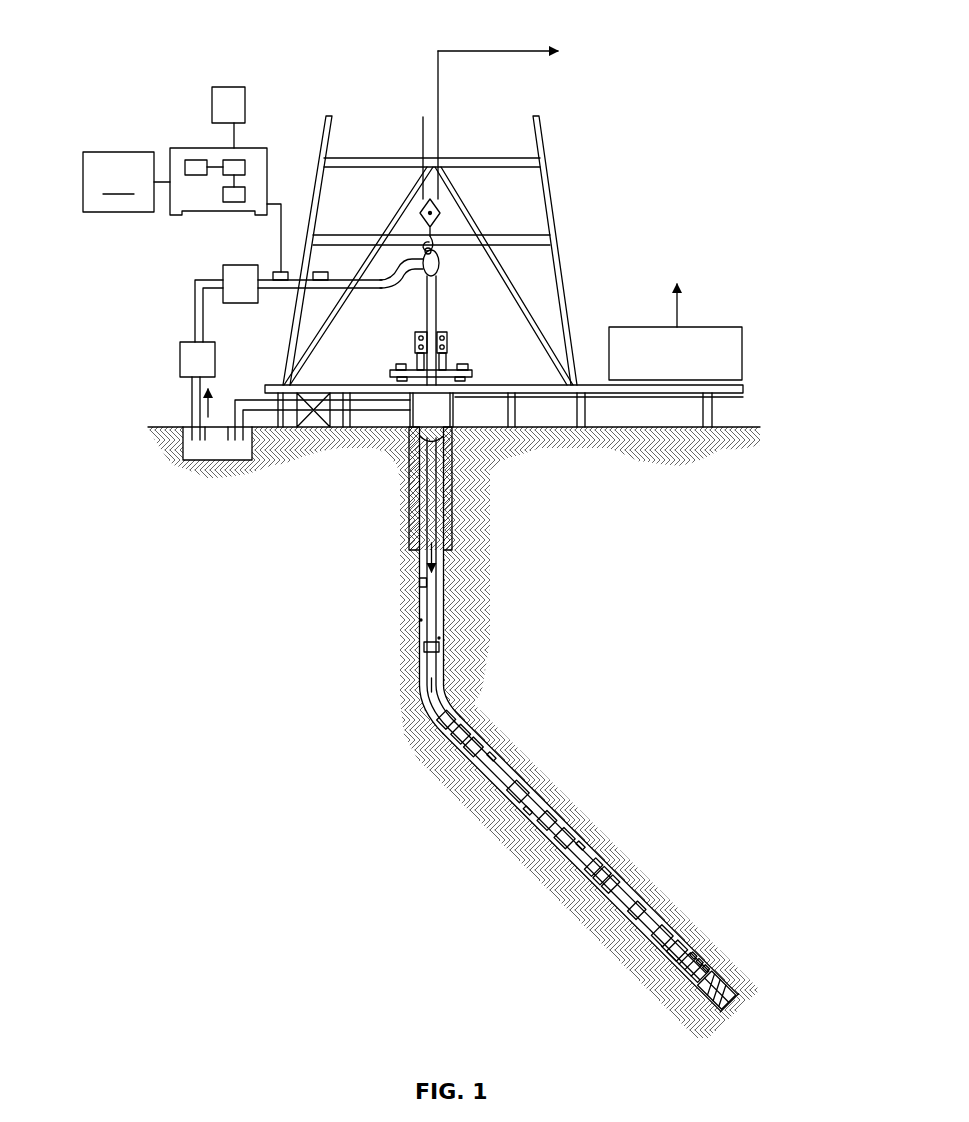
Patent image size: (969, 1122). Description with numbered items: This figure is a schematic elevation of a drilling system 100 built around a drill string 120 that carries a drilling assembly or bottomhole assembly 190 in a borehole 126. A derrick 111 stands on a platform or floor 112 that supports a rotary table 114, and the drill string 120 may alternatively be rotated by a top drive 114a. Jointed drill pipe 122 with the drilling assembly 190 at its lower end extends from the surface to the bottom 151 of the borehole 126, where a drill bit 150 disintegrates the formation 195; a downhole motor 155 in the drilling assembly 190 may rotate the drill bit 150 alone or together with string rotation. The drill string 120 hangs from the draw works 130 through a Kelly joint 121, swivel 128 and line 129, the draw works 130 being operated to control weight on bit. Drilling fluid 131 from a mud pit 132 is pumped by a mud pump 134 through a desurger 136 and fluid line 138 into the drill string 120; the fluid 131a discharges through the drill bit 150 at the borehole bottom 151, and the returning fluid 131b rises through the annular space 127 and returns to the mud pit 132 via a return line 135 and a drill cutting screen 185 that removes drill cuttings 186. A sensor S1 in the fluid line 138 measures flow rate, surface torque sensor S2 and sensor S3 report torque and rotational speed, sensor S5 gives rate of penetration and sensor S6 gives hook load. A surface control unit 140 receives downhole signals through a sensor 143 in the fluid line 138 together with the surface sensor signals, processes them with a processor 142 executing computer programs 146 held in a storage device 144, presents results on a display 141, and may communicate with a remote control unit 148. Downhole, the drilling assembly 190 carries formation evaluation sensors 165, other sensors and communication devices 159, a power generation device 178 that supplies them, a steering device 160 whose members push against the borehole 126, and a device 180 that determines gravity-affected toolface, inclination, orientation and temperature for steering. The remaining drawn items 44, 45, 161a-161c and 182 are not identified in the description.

The drilling system 100 is at (209, 44).
The display/monitor 141 is at (221, 87).
The surface control unit 140 is at (200, 148).
The processor 142 is at (186, 159).
The storage device 144 is at (237, 160).
The computer programs 146 is at (233, 203).
The remote control unit 148 is at (118, 182).
The communication link 44 is at (118, 214).
The cable 45 is at (272, 204).
The derrick 111 is at (561, 250).
The platform or floor 112 is at (578, 380).
The rotary table 114 is at (445, 377).
The top drive 114a is at (448, 345).
The drill string 120 is at (440, 620).
The Kelly joint 121 is at (438, 320).
The drill pipe 122 is at (419, 612).
The borehole 126 is at (447, 700).
The annular space 127 is at (470, 722).
The swivel 128 is at (425, 282).
The line 129 is at (443, 142).
The draw works 130 is at (712, 327).
The drilling fluid 131 is at (190, 430).
The drilling fluid 131a is at (428, 562).
The returning drilling fluid 131b is at (428, 690).
The mud pit 132 is at (212, 457).
The mud pump 134 is at (180, 357).
The return line 135 is at (366, 412).
The desurger 136 is at (223, 272).
The fluid line 138 is at (283, 290).
The sensor 143 is at (277, 272).
The drill bit 150 is at (725, 964).
The bottom of the borehole 151 is at (721, 1013).
The downhole motor 155 is at (503, 770).
The sensors and communication devices 159 is at (676, 990).
The steering device 160 is at (675, 963).
The sensors 161a-161c is at (693, 960).
The formation evaluation sensors 165 is at (590, 883).
The power generation device 178 is at (440, 730).
The device for determining gravity-affected toolface 180 is at (633, 930).
The stabilizers 182 is at (643, 893).
The drill cutting screen 185 is at (305, 385).
The drill cuttings 186 is at (437, 568).
The bottomhole assembly 190 is at (635, 761).
The formation 195 is at (716, 809).
The sensor S1 is at (320, 272).
The surface torque sensor S2 is at (462, 368).
The sensor S3 is at (398, 365).
The sensor S5 is at (439, 290).
The sensor S6 is at (418, 247).